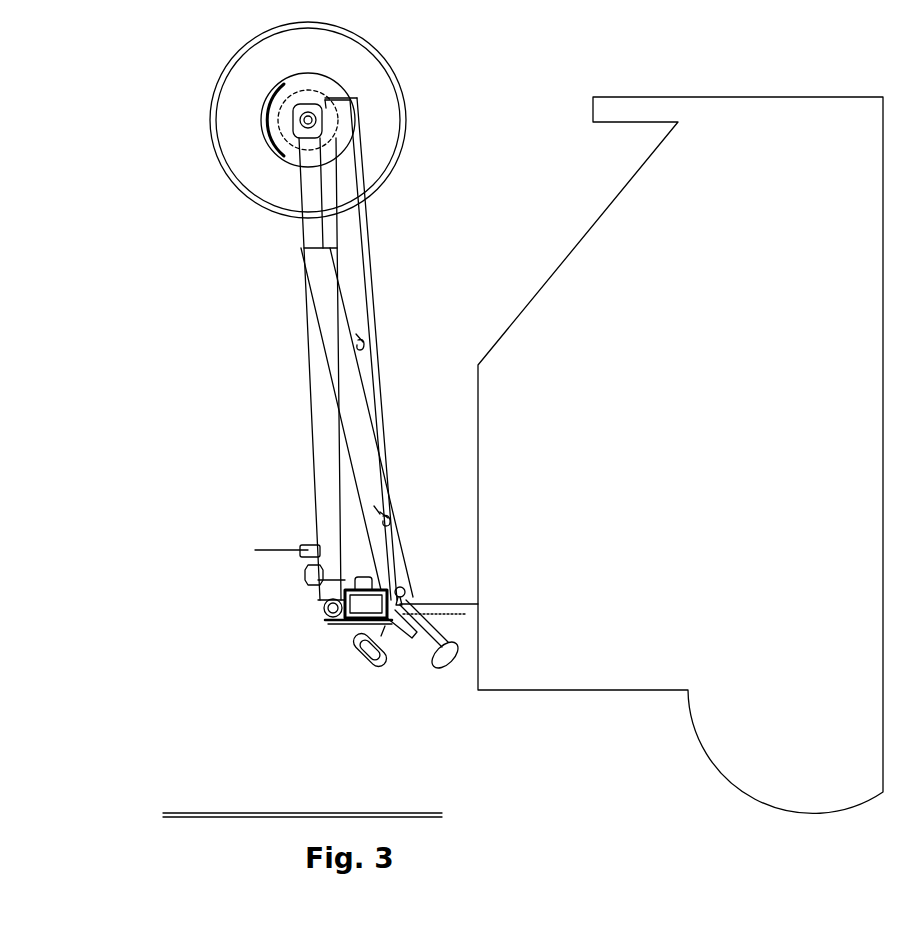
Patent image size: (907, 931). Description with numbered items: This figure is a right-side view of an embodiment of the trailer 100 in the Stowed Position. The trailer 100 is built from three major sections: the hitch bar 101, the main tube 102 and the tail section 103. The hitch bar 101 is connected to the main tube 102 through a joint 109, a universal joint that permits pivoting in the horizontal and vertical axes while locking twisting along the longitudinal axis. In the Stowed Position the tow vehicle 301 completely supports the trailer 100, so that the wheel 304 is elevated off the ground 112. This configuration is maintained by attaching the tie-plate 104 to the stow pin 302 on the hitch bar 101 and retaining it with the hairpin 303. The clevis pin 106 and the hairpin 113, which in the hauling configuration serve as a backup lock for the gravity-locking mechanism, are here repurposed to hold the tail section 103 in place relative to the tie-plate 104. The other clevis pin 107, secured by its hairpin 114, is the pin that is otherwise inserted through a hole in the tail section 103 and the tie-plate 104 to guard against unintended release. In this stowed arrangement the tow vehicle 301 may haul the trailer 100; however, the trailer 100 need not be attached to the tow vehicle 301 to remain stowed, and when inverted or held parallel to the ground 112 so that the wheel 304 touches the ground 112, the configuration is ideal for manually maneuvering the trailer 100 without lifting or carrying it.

The trailer 100 is at (261, 376).
The hitch bar 101 is at (407, 658).
The main tube 102 is at (289, 350).
The tail section 103 is at (392, 349).
The tie-plate 104 is at (380, 422).
The clevis pin 106 is at (417, 467).
The clevis pin 107 is at (408, 349).
The joint 109 is at (293, 599).
The ground 112 is at (316, 786).
The hairpin 113 is at (420, 498).
The hairpin 114 is at (408, 313).
The tow vehicle 301 is at (641, 455).
The stow pin 302 is at (327, 665).
The hairpin 303 is at (308, 644).
The wheel 304 is at (282, 121).